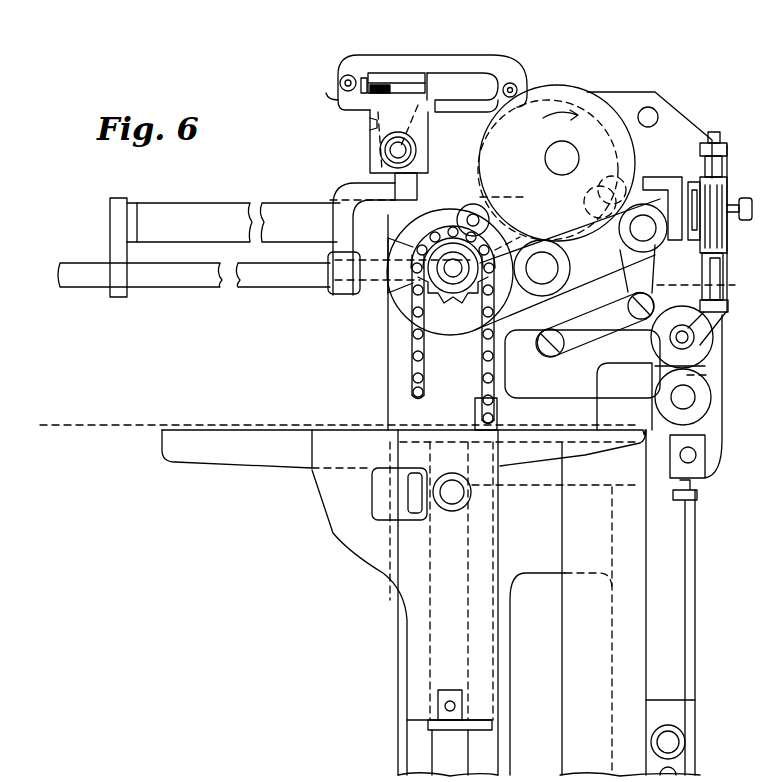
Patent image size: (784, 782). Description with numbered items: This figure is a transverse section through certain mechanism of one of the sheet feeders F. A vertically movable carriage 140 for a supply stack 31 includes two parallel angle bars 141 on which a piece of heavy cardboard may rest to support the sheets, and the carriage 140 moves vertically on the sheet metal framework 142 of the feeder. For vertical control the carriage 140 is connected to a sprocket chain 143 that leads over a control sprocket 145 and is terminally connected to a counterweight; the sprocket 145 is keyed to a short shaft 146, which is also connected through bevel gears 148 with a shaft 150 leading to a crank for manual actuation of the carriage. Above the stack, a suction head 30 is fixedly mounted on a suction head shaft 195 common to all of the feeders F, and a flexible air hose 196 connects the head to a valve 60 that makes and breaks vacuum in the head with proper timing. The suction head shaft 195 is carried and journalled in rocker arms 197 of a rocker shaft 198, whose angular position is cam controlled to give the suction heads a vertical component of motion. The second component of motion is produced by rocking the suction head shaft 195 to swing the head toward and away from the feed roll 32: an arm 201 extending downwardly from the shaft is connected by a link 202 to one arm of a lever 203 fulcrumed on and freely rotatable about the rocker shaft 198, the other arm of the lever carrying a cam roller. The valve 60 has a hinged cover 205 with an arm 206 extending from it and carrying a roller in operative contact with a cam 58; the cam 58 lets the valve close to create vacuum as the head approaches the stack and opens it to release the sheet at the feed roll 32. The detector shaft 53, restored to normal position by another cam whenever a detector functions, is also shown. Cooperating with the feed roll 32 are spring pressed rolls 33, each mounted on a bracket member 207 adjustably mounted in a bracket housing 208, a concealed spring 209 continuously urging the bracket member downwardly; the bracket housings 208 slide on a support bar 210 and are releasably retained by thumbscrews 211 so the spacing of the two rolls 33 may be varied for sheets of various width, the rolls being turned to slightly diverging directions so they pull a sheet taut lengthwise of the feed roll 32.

The feeder F is at (692, 92).
The suction head 30 is at (707, 375).
The supply stack 31 is at (118, 410).
The feed roll 32 is at (708, 413).
The spring pressed roll 33 is at (705, 358).
The detector shaft 53 is at (565, 155).
The cam 58 is at (580, 100).
The valve 60 is at (364, 141).
The carriage 140 is at (312, 485).
The angle bars 141 is at (193, 452).
The framework 142 is at (389, 620).
The sprocket chain 143 is at (482, 358).
The control sprocket 145 is at (453, 278).
The short shaft 146 is at (408, 312).
The bevel gears 148 is at (412, 290).
The shaft 150 is at (222, 284).
The suction head shaft 195 is at (641, 222).
The flexible air hose 196 is at (385, 152).
The rocker arms 197 is at (505, 230).
The rocker shaft 198 is at (539, 253).
The arm 201 is at (714, 283).
The link 202 is at (592, 358).
The lever 203 is at (535, 326).
The hinged cover 205 is at (382, 73).
The arm 206 is at (468, 55).
The bracket member 207 is at (728, 308).
The bracket housing 208 is at (726, 270).
The concealed spring 209 is at (728, 245).
The support bar 210 is at (706, 200).
The thumbscrew 211 is at (744, 198).